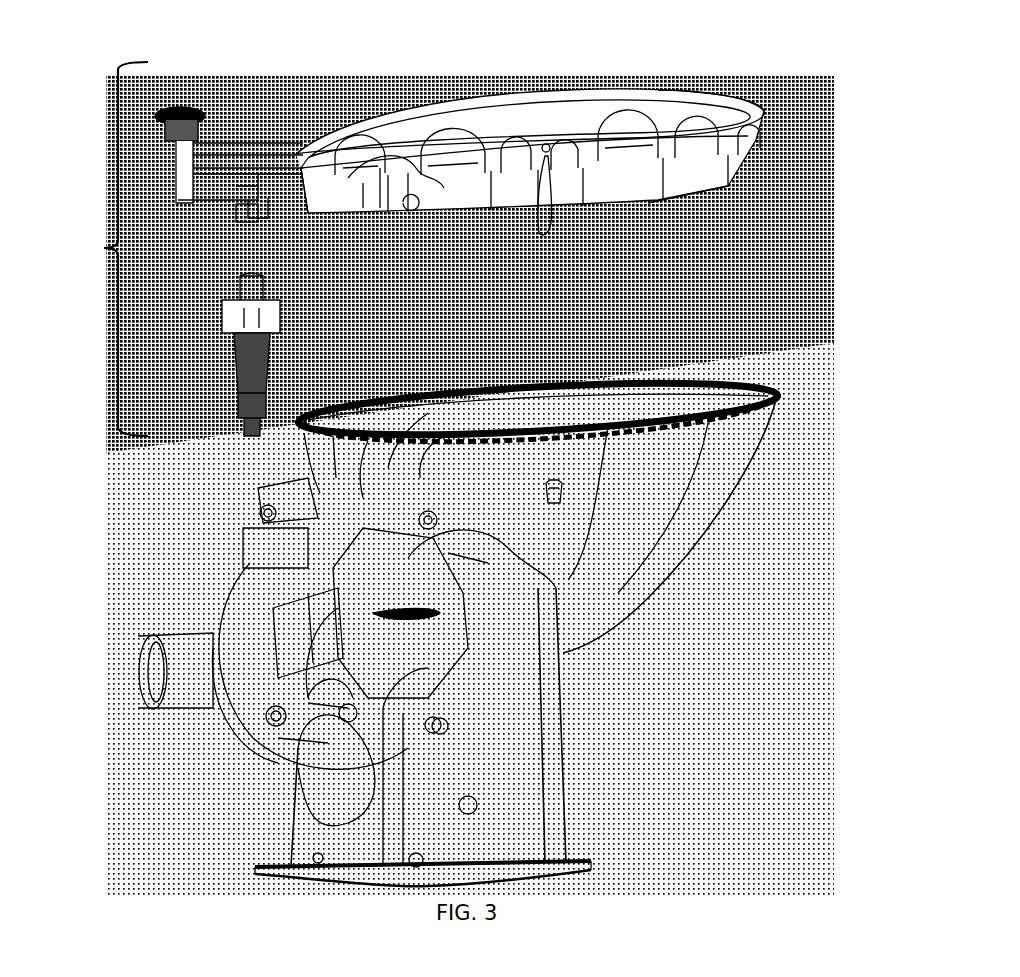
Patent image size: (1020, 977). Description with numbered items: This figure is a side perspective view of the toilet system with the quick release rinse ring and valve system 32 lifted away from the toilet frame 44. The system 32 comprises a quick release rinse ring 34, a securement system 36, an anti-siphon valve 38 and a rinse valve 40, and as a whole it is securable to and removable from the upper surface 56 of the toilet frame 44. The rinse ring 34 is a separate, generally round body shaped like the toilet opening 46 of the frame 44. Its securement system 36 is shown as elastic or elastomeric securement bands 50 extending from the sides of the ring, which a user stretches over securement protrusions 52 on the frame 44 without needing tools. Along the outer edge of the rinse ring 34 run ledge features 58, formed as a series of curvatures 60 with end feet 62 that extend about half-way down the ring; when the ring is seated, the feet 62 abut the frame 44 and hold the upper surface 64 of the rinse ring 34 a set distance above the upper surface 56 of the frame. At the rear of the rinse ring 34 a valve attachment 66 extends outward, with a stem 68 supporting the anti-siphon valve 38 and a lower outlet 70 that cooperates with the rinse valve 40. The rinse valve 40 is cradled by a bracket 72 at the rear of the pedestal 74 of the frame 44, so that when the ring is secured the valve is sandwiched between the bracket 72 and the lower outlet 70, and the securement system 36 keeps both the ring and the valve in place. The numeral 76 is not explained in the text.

The quick release rinse ring and valve system 32 is at (97, 249).
The quick release rinse ring 34 is at (750, 128).
The securement system 36 is at (726, 183).
The anti-siphon valve 38 is at (192, 128).
The rinse valve 40 is at (270, 345).
The toilet frame 44 is at (745, 478).
The toilet opening 46 is at (515, 398).
The securement bands 50 is at (553, 205).
The securement protrusions 52 is at (545, 497).
The upper surface 56 is at (770, 388).
The ledge features 58 is at (578, 144).
The curvatures 60 is at (613, 128).
The end feet 62 is at (648, 153).
The upper surface of the rinse ring 64 is at (710, 82).
The valve attachment 66 is at (268, 118).
The stem 68 is at (259, 150).
The lower outlet 70 is at (233, 207).
The bracket 72 is at (258, 536).
The pedestal 74 is at (452, 761).
The inner mechanism hub 76 is at (400, 160).